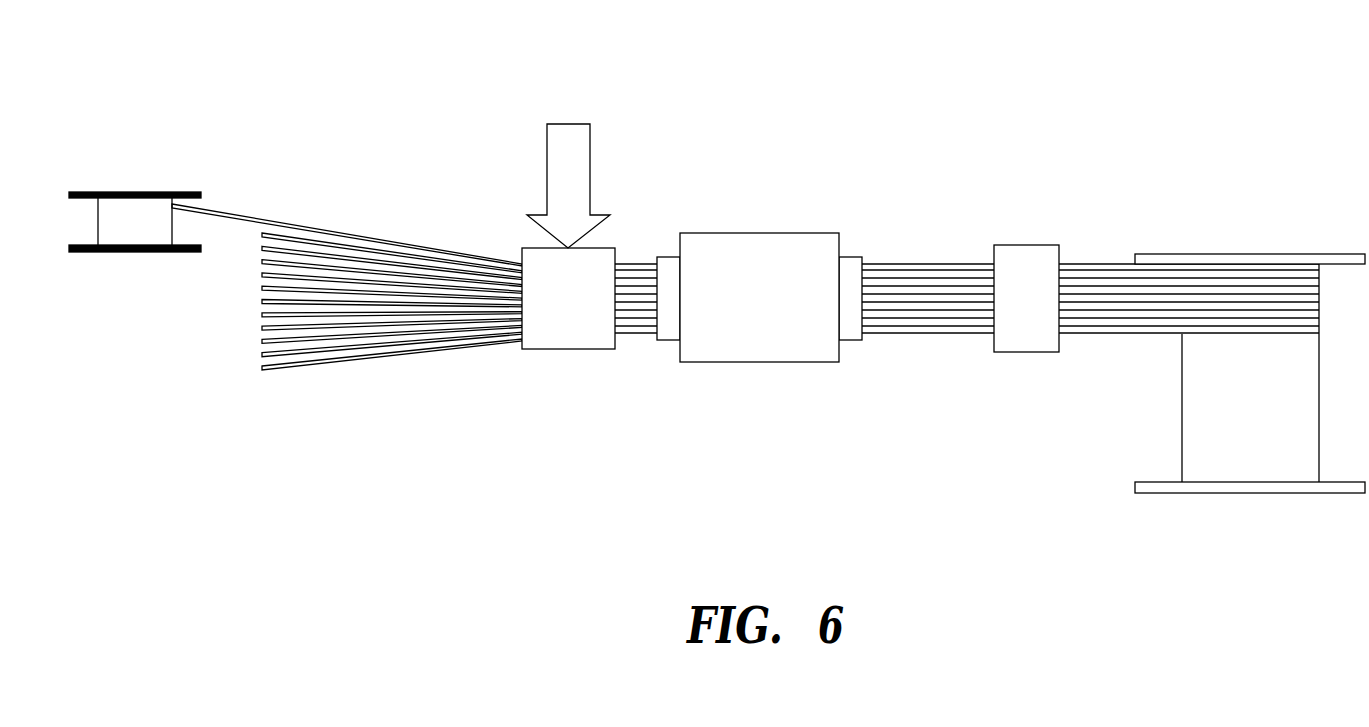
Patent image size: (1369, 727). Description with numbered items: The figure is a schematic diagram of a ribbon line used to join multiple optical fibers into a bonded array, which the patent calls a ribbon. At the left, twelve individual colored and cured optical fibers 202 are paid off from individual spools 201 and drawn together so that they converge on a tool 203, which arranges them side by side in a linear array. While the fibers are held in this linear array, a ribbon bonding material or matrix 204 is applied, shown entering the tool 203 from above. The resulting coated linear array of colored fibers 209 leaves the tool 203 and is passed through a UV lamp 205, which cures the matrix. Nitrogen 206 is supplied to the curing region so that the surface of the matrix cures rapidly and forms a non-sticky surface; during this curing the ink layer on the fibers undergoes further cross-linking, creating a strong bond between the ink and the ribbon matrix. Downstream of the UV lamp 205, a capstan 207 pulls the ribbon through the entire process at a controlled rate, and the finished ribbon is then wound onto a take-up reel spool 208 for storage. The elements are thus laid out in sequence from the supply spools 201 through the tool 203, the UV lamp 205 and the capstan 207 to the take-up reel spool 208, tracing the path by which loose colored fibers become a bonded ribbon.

The spools 201 is at (135, 180).
The individual colored and cured optical fibers 202 is at (370, 215).
The tool 203 is at (592, 322).
The matrix 204 is at (569, 110).
The UV lamp 205 is at (783, 322).
The nitrogen 206 is at (668, 247).
The capstan 207 is at (1028, 230).
The take-up reel spool 208 is at (1249, 227).
The coated linear array of colored fibers 209 is at (626, 248).